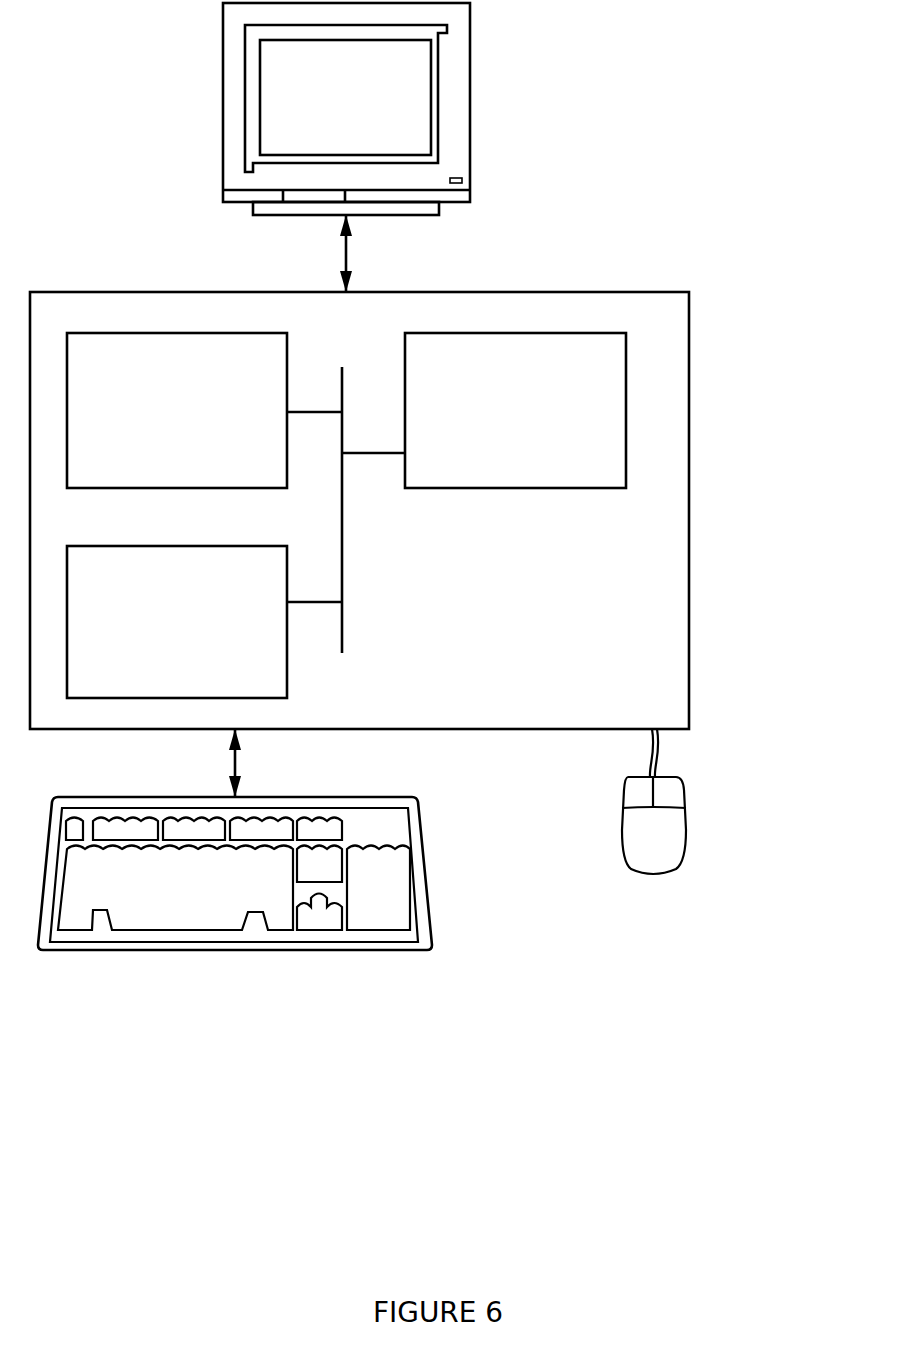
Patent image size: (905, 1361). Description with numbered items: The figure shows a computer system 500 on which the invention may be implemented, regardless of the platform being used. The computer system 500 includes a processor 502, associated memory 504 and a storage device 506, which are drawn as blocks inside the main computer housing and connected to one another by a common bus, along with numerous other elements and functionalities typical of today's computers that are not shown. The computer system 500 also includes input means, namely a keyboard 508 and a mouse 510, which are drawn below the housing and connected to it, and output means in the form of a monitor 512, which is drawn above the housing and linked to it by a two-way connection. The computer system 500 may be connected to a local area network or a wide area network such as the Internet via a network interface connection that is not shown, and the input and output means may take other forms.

The computer system 500 is at (717, 145).
The processor 502 is at (512, 421).
The memory 504 is at (158, 421).
The storage device 506 is at (153, 632).
The keyboard 508 is at (147, 911).
The mouse 510 is at (632, 846).
The monitor 512 is at (325, 114).